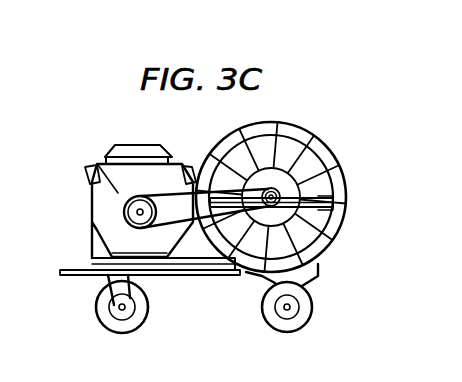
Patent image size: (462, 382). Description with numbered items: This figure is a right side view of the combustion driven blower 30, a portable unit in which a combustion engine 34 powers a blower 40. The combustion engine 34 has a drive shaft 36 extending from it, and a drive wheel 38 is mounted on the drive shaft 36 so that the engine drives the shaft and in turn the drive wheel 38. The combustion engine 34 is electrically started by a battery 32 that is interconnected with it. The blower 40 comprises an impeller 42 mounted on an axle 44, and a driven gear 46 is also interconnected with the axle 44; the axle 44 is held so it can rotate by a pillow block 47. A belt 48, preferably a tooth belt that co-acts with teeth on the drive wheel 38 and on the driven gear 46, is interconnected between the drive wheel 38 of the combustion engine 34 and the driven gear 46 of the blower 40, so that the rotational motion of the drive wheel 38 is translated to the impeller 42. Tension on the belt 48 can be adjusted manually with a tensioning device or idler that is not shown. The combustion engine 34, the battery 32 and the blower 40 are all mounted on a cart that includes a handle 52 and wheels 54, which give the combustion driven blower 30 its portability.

The combustion driven blower 30 is at (362, 280).
The battery 32 is at (92, 253).
The combustion engine 34 is at (92, 198).
The drive shaft 36 is at (128, 216).
The drive wheel 38 is at (110, 177).
The blower 40 is at (334, 198).
The impeller 42 is at (312, 163).
The axle 44 is at (305, 148).
The driven gear 46 is at (233, 147).
The pillow block 47 is at (325, 220).
The belt 48 is at (155, 193).
The handle 52 is at (62, 274).
The wheels 54 is at (140, 328).